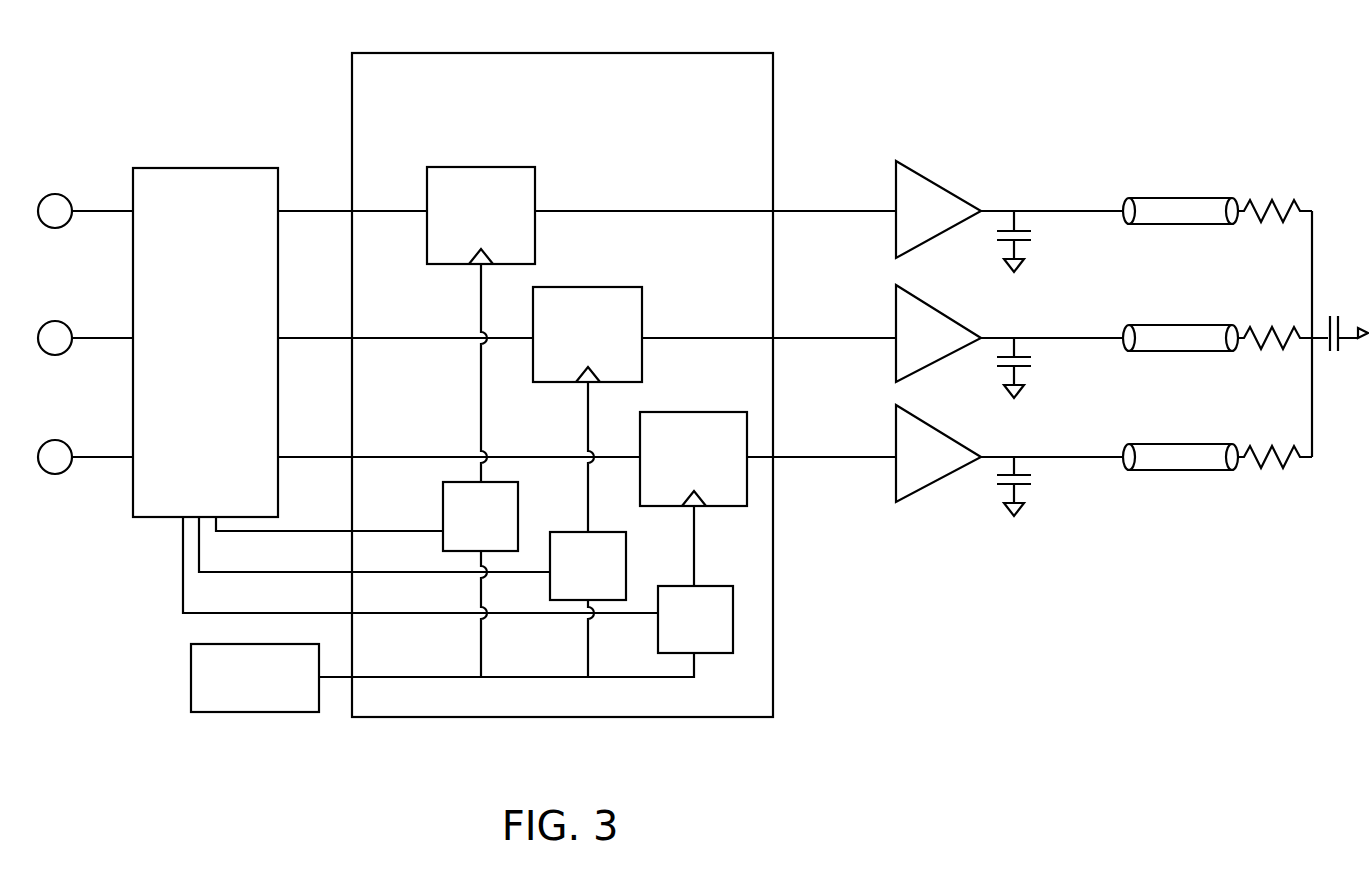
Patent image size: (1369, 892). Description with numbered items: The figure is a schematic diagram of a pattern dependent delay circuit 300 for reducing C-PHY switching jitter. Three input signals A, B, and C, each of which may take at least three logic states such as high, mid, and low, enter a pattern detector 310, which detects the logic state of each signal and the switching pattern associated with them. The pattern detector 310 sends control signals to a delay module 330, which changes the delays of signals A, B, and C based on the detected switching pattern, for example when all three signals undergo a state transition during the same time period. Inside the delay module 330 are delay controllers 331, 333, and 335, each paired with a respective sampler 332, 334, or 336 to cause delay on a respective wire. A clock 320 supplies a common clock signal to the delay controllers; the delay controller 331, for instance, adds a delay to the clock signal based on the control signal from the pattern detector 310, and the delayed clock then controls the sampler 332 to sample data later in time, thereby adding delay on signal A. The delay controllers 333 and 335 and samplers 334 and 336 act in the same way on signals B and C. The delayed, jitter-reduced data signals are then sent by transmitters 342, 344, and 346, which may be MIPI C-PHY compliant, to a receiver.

The pattern dependent delay circuit 300 is at (112, 84).
The pattern detector 310 is at (205, 342).
The clock 320 is at (255, 678).
The delay module 330 is at (624, 385).
The delay controller 331 is at (480, 516).
The sampler 332 is at (481, 215).
The delay controller 333 is at (588, 566).
The sampler 334 is at (587, 334).
The delay controller 335 is at (695, 619).
The sampler 336 is at (693, 459).
The transmitter 342 is at (938, 209).
The transmitter 344 is at (938, 333).
The transmitter 346 is at (938, 453).